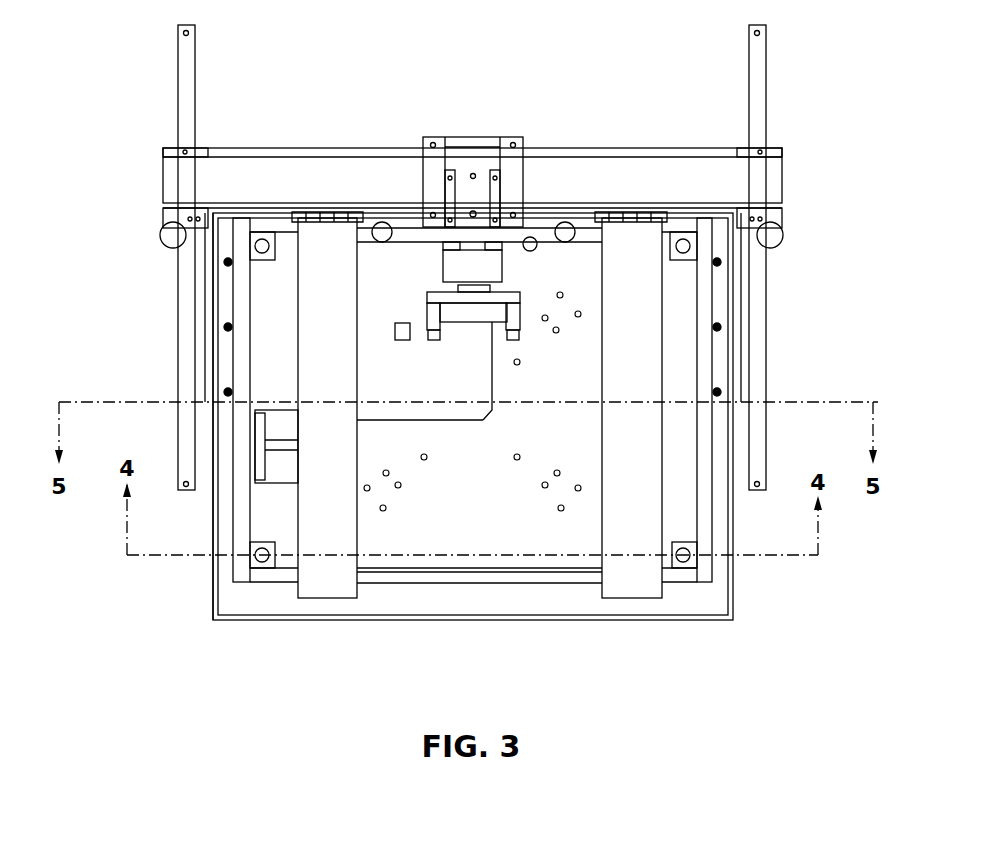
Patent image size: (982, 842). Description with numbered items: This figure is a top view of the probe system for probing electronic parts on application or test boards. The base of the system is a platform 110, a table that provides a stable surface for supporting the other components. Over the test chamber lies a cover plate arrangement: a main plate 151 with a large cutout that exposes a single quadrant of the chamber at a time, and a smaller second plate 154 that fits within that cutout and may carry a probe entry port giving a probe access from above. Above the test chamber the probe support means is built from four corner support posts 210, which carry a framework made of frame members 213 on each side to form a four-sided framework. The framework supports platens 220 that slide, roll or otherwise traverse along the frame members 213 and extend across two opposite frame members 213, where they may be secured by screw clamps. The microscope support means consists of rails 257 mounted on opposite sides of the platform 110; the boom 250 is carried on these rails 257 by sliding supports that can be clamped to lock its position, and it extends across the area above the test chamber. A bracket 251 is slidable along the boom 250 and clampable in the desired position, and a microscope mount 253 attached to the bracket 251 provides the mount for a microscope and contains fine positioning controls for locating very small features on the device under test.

The platform 110 is at (468, 608).
The main plate 151 is at (480, 478).
The second plate 154 is at (450, 405).
The support post 210 is at (683, 568).
The frame member 213 is at (245, 580).
The platen 220 is at (333, 590).
The boom 250 is at (287, 167).
The bracket 251 is at (483, 150).
The microscope mount 253 is at (440, 298).
The rail 257 is at (185, 345).